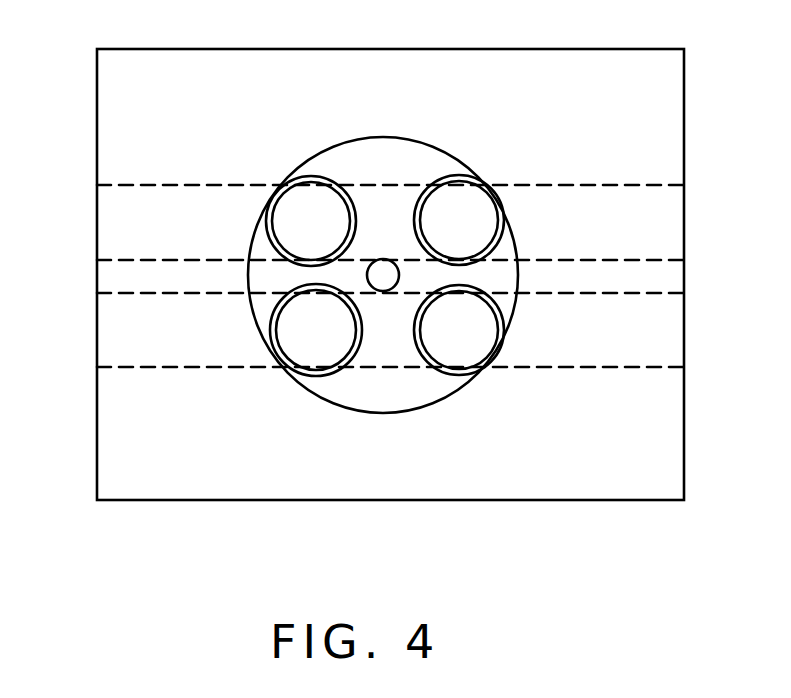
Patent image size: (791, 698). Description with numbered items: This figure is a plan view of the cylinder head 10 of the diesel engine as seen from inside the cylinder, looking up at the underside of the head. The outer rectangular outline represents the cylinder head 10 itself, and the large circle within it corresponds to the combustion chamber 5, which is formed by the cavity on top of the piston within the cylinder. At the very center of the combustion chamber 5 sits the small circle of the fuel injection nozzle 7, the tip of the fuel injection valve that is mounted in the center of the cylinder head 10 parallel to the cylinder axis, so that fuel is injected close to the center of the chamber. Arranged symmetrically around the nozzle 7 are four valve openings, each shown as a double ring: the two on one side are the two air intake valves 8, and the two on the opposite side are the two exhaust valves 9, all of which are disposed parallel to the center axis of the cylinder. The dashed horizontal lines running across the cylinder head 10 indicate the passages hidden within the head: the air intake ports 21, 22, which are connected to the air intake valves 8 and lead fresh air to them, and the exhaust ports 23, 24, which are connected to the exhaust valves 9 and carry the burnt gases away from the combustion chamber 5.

The combustion chamber 5 is at (408, 163).
The fuel injection nozzle 7 is at (385, 280).
The air intake valves 8 is at (303, 200).
The exhaust valves 9 is at (462, 205).
The cylinder head 10 is at (97, 458).
The air intake port 21 is at (150, 368).
The air intake port 22 is at (120, 185).
The exhaust port 23 is at (648, 368).
The exhaust port 24 is at (613, 185).